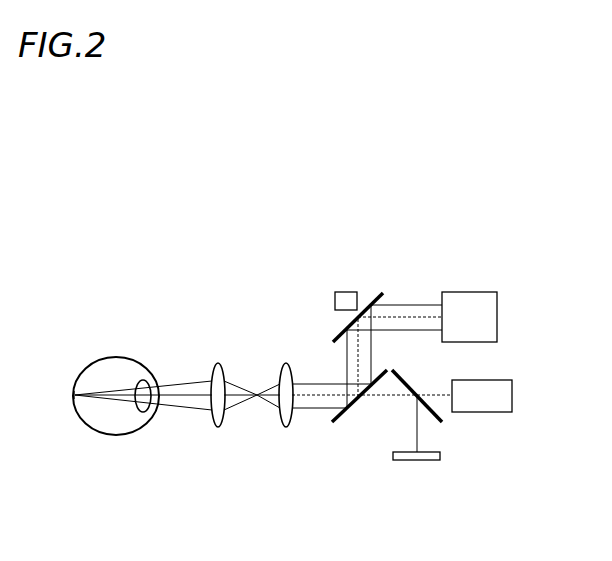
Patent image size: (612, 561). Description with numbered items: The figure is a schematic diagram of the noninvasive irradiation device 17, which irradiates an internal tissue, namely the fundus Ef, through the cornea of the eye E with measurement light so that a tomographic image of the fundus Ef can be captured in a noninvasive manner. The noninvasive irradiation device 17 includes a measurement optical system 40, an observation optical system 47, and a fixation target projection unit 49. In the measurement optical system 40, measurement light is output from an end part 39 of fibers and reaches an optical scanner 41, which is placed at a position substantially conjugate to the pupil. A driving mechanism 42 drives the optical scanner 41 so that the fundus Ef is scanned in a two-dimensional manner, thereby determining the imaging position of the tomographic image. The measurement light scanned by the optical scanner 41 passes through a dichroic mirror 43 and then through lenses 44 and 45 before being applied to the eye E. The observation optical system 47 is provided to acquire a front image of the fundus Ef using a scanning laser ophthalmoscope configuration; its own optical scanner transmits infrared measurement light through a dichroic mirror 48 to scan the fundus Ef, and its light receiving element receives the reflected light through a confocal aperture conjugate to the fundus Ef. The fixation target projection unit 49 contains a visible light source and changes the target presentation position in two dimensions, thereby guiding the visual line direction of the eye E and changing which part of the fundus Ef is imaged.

The noninvasive irradiation device 17 is at (292, 280).
The eye E is at (91, 338).
The fundus Ef is at (83, 425).
The lens 45 is at (219, 433).
The lens 44 is at (287, 433).
The dichroic mirror 43 is at (359, 444).
The dichroic mirror 48 is at (483, 377).
The fixation target projection unit 49 is at (417, 489).
The observation optical system 47 is at (482, 435).
The measurement optical system 40 is at (415, 262).
The optical scanner 41 is at (324, 312).
The driving mechanism 42 is at (337, 277).
The end part of fibers 39 is at (469, 284).